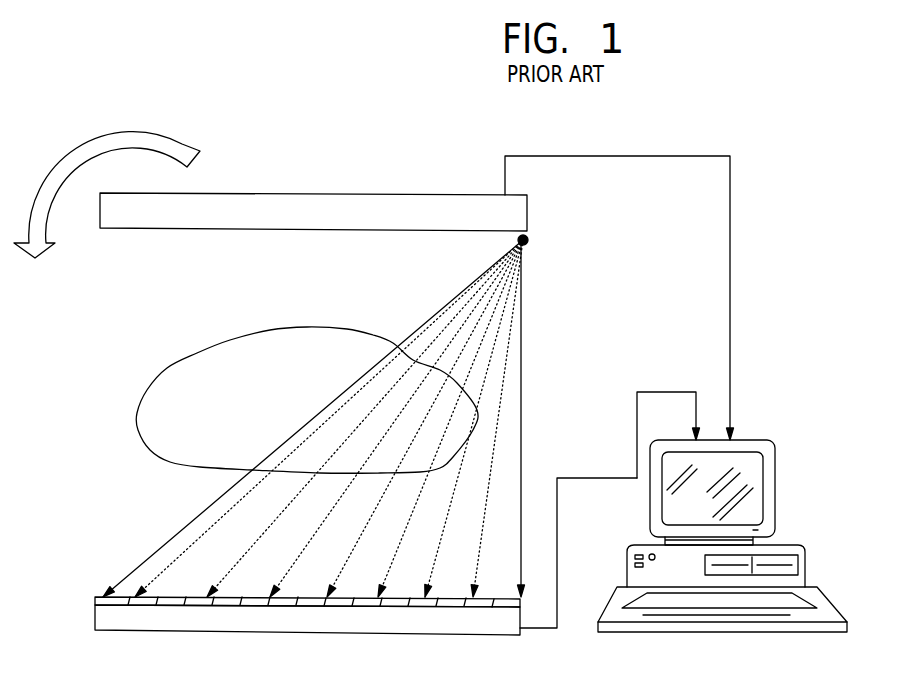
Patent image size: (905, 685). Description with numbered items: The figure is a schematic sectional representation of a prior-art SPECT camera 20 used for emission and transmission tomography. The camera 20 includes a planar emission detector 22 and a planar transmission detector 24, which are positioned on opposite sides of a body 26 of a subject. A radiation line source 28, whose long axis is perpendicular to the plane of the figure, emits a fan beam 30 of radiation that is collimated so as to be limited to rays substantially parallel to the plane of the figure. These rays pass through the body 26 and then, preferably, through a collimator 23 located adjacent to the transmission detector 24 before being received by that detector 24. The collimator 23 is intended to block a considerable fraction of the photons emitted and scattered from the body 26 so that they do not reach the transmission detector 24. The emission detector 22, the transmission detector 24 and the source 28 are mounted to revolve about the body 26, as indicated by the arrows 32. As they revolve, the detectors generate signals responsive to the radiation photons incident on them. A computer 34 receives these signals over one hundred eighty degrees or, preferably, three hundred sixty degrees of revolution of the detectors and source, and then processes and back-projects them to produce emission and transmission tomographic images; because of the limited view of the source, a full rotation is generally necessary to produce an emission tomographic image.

The SPECT camera 20 is at (322, 150).
The planar emission detector 22 is at (100, 212).
The collimator 23 is at (96, 599).
The planar transmission detector 24 is at (143, 622).
The body 26 is at (240, 343).
The radiation line source 28 is at (528, 244).
The fan beam 30 is at (418, 330).
The arrows 32 is at (180, 143).
The computer 34 is at (627, 555).